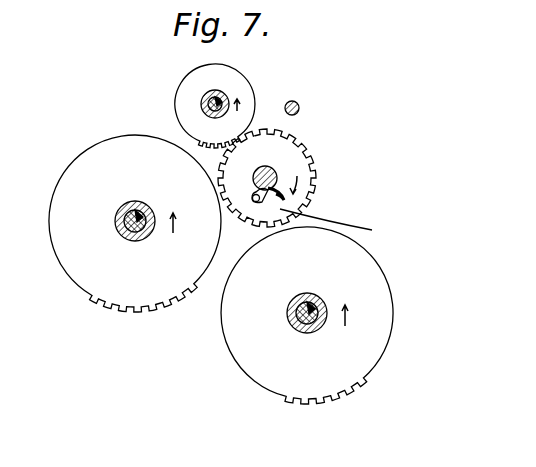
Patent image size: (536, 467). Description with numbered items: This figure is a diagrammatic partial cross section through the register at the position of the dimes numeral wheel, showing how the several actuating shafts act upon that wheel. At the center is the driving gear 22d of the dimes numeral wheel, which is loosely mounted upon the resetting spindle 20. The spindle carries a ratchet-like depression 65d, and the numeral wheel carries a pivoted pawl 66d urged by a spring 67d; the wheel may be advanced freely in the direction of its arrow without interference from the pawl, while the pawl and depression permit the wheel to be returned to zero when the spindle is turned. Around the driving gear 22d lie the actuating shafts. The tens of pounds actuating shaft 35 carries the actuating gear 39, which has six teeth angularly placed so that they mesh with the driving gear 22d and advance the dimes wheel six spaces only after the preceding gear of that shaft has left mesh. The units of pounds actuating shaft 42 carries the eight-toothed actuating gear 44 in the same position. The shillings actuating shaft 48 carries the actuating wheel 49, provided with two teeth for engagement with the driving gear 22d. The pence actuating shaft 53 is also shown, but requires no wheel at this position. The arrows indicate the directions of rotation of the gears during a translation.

The resetting spindle 20 is at (278, 179).
The driving gear of the dimes numeral wheel 22d is at (372, 230).
The tens of pounds actuating shaft 35 is at (293, 325).
The actuating gear 39 is at (365, 353).
The units of pounds actuating shaft 42 is at (121, 232).
The actuating gear 44 is at (148, 292).
The shillings actuating shaft 48 is at (201, 102).
The actuating wheel 49 is at (238, 82).
The pence actuating shaft 53 is at (300, 108).
The ratchet-like depression 65d is at (276, 168).
The pivoted pawl 66d is at (262, 203).
The spring 67d is at (272, 192).